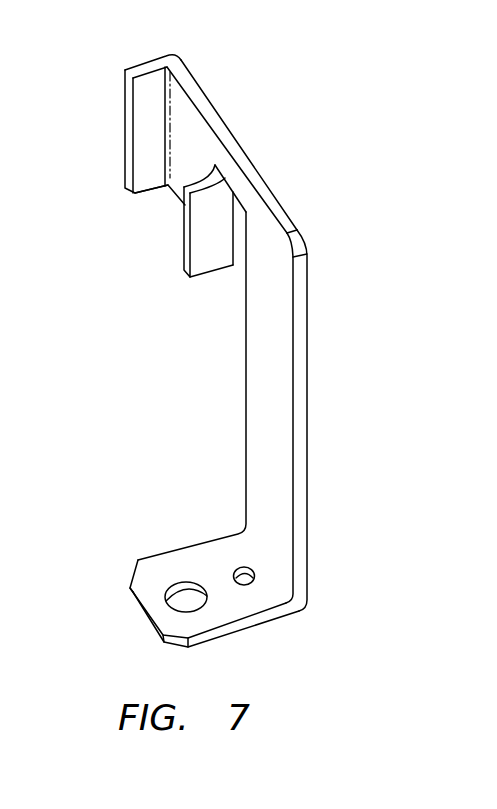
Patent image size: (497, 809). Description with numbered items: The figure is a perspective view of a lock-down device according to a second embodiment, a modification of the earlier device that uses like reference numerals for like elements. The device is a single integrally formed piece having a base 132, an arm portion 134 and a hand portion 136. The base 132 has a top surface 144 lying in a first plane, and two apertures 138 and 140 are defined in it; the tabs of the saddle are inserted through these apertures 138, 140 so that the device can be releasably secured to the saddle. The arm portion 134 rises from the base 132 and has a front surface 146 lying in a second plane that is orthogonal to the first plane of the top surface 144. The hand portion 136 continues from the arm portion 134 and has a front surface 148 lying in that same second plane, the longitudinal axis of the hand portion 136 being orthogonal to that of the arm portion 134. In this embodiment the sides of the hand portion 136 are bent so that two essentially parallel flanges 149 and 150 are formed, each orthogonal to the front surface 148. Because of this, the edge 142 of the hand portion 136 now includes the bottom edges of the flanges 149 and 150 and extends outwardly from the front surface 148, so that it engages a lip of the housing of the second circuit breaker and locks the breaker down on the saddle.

The base 132 is at (219, 612).
The arm portion 134 is at (277, 421).
The hand portion 136 is at (199, 152).
The aperture 138 is at (173, 612).
The aperture 140 is at (243, 568).
The edge 142 is at (150, 190).
The top surface 144 is at (147, 580).
The front surface 146 is at (258, 357).
The front surface 148 is at (213, 144).
The flange 149 is at (146, 118).
The flange 150 is at (205, 233).